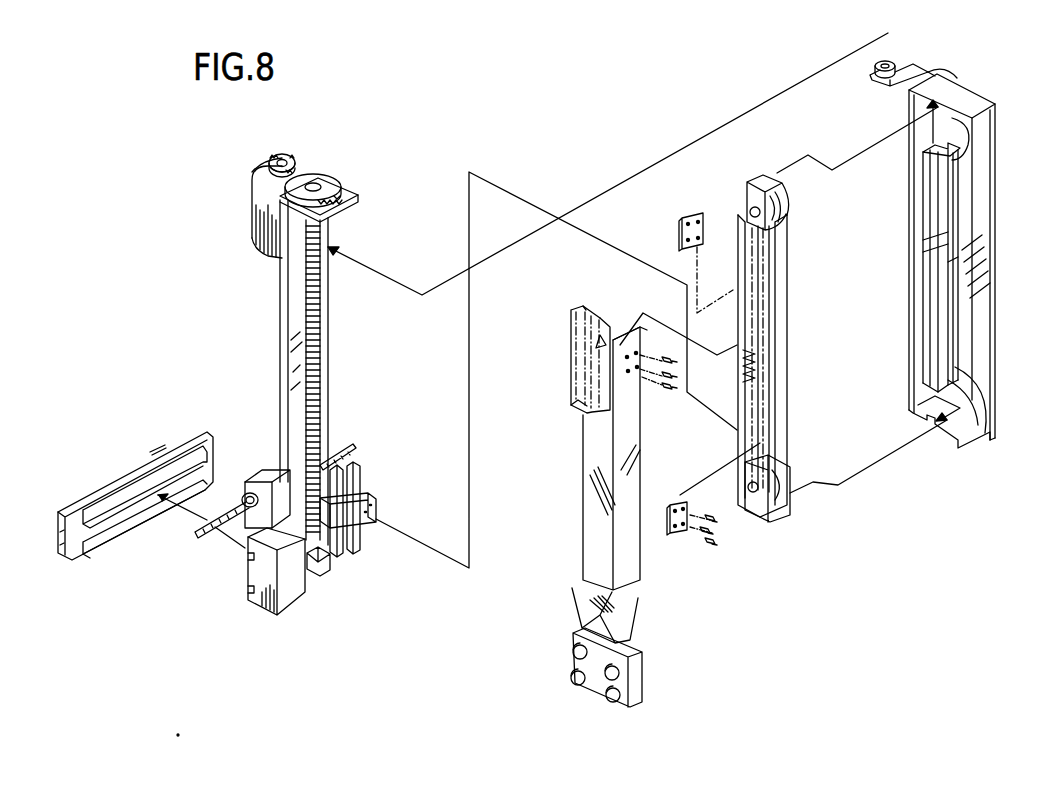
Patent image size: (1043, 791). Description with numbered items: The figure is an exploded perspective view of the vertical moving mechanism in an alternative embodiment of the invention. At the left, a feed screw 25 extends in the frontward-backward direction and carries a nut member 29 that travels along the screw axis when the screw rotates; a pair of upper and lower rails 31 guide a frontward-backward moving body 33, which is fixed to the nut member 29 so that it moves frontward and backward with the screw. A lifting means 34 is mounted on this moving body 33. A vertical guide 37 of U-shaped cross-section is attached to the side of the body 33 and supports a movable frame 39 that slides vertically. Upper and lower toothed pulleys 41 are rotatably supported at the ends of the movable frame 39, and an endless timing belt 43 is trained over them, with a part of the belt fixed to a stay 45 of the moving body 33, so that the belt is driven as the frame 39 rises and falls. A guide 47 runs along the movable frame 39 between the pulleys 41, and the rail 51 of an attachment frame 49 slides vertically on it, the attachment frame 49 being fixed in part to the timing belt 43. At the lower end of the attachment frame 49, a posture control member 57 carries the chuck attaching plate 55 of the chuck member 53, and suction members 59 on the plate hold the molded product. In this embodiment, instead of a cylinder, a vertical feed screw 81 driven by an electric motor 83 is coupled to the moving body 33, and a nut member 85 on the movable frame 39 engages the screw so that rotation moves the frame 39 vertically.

The feed screw 25 is at (203, 538).
The nut member 29 is at (245, 497).
The upper and lower rails 31 is at (112, 507).
The frontward-backward moving body 33 is at (247, 592).
The lifting means 34 is at (207, 356).
The vertical guide 37 is at (352, 476).
The movable frame 39 is at (972, 258).
The toothed pulleys 41 is at (772, 217).
The timing belt 43 is at (782, 353).
The stay 45 is at (378, 513).
The guide 47 is at (948, 108).
The attachment frame 49 is at (631, 438).
The rail 51 is at (605, 418).
The chuck member 53 is at (682, 641).
The chuck attaching plate 55 is at (599, 668).
The posture control member 57 is at (630, 610).
The suction members 59 is at (574, 660).
The feed screw 81 is at (325, 332).
The electric motor 83 is at (252, 200).
The nut member 85 is at (890, 60).